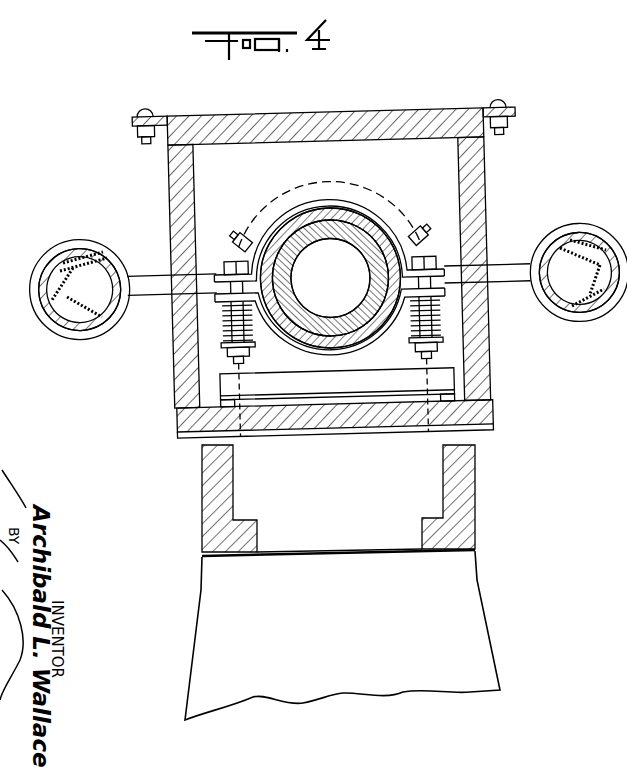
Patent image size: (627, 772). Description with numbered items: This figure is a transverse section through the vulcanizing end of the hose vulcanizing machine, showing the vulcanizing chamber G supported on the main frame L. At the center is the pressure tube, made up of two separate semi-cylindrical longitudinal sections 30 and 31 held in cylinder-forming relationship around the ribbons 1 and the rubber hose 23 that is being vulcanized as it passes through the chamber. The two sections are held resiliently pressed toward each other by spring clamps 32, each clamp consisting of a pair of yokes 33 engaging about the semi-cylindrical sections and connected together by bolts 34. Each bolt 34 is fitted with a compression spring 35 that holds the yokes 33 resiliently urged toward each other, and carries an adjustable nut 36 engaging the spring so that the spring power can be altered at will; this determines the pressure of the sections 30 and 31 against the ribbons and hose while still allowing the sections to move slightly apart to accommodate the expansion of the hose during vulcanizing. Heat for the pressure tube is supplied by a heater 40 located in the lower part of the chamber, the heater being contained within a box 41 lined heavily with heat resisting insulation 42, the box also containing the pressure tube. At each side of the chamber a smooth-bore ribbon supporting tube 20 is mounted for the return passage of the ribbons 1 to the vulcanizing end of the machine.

The vulcanizing chamber G is at (327, 254).
The ribbons 1 is at (325, 231).
The ribbon supporting tubes 20 is at (106, 263).
The rubber hose 23 is at (331, 239).
The semi-cylindrical longitudinal section 30 is at (371, 226).
The semi-cylindrical longitudinal section 31 is at (368, 341).
The spring clamps 32 is at (280, 222).
The yokes 33 is at (393, 233).
The bolts 34 is at (222, 322).
The compression spring 35 is at (222, 340).
The adjustable nuts 36 is at (228, 352).
The heater 40 is at (337, 387).
The box 41 is at (372, 437).
The heat resisting insulation 42 is at (307, 436).
The main frame L is at (472, 529).